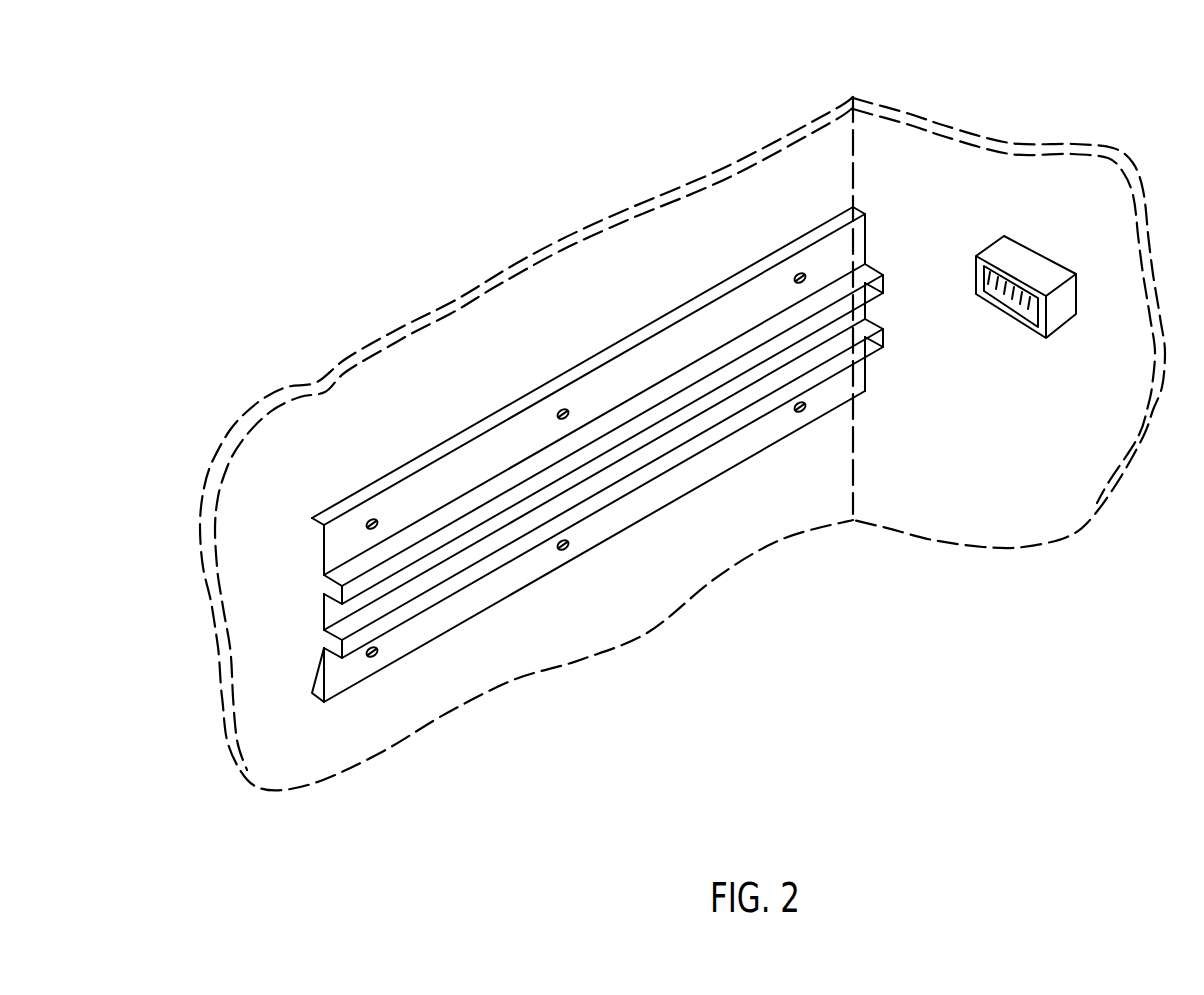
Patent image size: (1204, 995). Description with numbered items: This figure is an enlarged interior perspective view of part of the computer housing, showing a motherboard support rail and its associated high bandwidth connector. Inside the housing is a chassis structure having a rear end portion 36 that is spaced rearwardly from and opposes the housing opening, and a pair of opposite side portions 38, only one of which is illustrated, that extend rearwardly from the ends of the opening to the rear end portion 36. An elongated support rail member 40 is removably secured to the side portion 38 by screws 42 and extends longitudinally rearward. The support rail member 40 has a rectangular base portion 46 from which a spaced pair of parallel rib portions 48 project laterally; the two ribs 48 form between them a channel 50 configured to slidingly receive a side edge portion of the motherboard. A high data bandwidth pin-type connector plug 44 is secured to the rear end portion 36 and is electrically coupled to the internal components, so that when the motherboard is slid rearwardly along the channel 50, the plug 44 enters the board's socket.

The rear end portion 36 is at (944, 126).
The side portion 38 is at (703, 177).
The support rail member 40 is at (509, 439).
The screws 42 is at (372, 516).
The connector plug 44 is at (1022, 258).
The base portion 46 is at (675, 347).
The rib portions 48 is at (638, 420).
The channel 50 is at (330, 616).